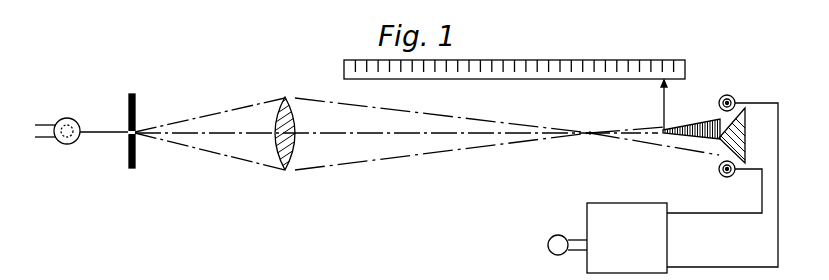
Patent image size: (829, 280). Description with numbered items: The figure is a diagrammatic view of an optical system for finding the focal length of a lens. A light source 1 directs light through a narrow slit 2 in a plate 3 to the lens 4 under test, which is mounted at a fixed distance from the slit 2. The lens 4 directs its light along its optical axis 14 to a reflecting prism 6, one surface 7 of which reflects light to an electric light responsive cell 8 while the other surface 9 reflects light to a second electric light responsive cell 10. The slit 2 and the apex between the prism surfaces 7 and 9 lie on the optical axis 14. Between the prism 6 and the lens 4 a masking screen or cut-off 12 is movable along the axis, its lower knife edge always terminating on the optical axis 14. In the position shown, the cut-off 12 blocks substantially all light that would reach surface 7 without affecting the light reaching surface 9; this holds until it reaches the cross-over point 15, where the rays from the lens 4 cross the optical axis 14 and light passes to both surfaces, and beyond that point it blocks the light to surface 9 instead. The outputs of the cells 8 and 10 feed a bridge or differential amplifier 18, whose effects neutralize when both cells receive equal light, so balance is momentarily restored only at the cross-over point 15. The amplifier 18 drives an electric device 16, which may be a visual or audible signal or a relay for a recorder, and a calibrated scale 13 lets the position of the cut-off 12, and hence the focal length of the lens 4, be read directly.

The light source 1 is at (72, 118).
The slit 2 is at (128, 135).
The plate 3 is at (129, 110).
The lens 4 is at (283, 97).
The reflecting prism 6 is at (744, 114).
The prism surface 7 is at (746, 128).
The electric light responsive cell 8 is at (727, 95).
The prism surface 9 is at (747, 148).
The electric light responsive cell 10 is at (723, 176).
The masking screen or cut-off 12 is at (666, 104).
The scale 13 is at (531, 60).
The optical axis 14 is at (447, 136).
The cross-over point 15 is at (590, 136).
The electric device 16 is at (553, 254).
The amplifier 18 is at (636, 206).